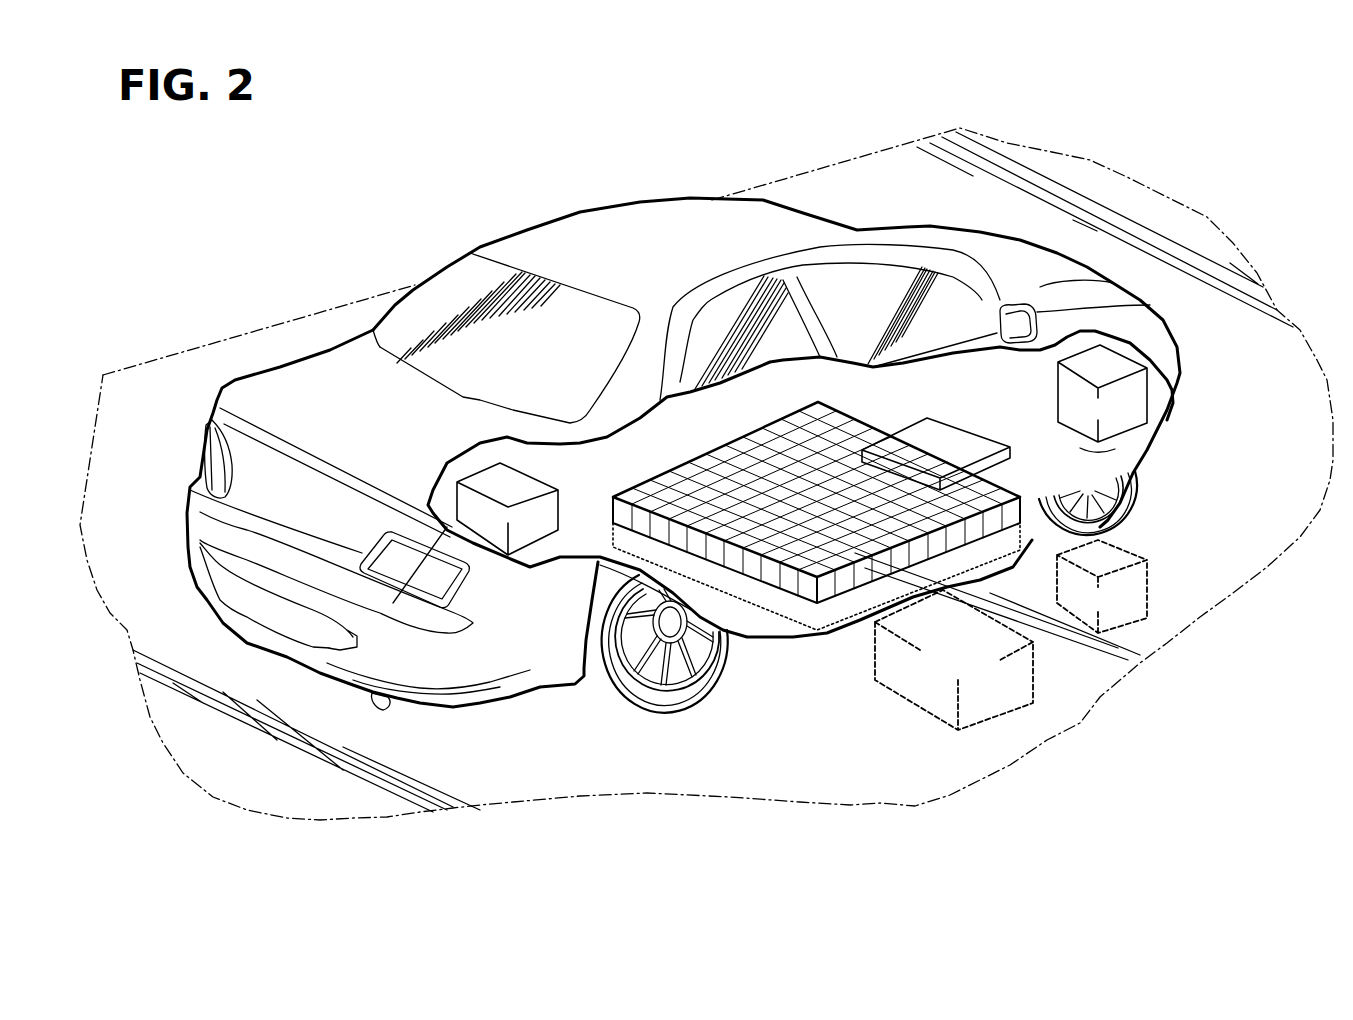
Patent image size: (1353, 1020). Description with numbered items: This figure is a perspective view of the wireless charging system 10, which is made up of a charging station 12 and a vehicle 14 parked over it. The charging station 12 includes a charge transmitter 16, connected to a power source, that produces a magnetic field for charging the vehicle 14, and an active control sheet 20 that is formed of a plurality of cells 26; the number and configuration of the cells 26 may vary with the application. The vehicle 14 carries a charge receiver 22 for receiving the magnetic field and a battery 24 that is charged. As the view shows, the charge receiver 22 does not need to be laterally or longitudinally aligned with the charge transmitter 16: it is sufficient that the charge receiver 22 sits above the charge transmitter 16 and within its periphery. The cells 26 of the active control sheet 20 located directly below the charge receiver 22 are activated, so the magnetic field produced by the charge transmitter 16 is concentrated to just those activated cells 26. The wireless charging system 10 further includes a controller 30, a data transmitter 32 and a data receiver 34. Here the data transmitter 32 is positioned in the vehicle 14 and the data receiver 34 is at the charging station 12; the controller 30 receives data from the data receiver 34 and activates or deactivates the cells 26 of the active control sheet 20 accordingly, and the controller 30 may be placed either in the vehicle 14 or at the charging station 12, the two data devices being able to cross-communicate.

The wireless charging system 10 is at (1049, 53).
The charging station 12 is at (757, 710).
The vehicle 14 is at (893, 227).
The charge transmitter 16 is at (818, 603).
The active control sheet 20 is at (761, 568).
The charge receiver 22 is at (943, 445).
The battery 24 is at (492, 487).
The cells 26 is at (742, 493).
The controller 30 is at (990, 720).
The data transmitter 32 is at (1147, 390).
The data receiver 34 is at (1150, 576).